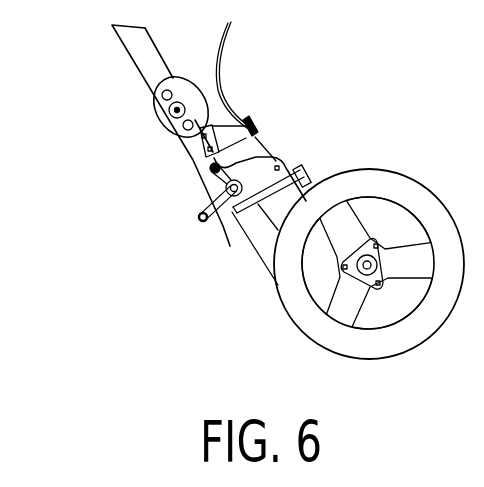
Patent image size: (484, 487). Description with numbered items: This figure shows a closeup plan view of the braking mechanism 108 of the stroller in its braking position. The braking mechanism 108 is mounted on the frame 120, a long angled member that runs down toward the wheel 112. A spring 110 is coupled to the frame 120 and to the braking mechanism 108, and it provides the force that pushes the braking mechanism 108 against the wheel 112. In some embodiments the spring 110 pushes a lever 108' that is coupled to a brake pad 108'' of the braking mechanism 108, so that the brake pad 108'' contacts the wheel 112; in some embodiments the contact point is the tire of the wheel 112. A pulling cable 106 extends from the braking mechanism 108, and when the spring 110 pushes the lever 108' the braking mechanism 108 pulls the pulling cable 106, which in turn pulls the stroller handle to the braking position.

The pulling cable 106 is at (219, 68).
The braking mechanism 108 is at (260, 180).
The lever 108' is at (213, 237).
The brake pad 108'' is at (297, 164).
The spring 110 is at (198, 215).
The wheel 112 is at (303, 316).
The frame 120 is at (143, 52).